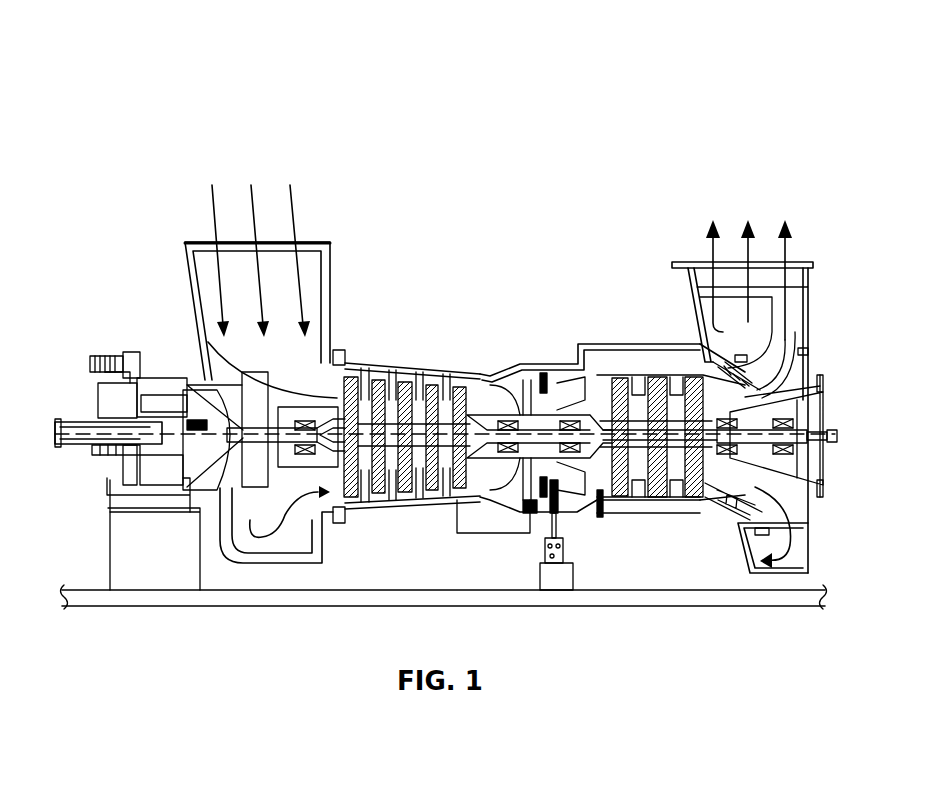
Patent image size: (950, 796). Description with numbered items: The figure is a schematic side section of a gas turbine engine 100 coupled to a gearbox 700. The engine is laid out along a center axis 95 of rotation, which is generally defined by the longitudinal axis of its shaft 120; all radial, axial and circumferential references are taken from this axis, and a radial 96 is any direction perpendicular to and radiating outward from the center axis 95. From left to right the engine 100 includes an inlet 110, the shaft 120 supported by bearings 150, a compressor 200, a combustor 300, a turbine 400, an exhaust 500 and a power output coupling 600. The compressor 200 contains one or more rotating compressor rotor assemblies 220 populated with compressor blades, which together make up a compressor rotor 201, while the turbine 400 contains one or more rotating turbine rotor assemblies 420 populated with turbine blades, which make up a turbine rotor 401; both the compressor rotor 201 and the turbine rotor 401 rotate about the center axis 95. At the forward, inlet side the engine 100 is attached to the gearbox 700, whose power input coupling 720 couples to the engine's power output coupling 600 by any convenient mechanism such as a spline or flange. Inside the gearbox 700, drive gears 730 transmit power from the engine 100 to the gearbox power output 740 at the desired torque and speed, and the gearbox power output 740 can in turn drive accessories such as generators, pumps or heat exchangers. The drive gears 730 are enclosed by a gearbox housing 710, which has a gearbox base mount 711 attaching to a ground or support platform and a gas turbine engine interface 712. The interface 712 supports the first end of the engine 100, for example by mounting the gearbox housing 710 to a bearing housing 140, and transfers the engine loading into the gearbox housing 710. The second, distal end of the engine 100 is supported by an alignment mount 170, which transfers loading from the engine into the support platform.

The gas turbine engine 100 is at (140, 28).
The inlet 110 is at (185, 162).
The shaft 120 is at (335, 520).
The bearing housing 140 is at (258, 560).
The bearings 150 is at (335, 505).
The compressor 200 is at (340, 162).
The compressor rotor 201 is at (478, 493).
The compressor rotor assemblies 220 is at (432, 480).
The combustor 300 is at (600, 167).
The alignment mount 170 is at (563, 552).
The turbine 400 is at (720, 164).
The turbine rotor 401 is at (680, 493).
The turbine rotor assemblies 420 is at (628, 500).
The exhaust 500 is at (723, 164).
The center axis 95 is at (833, 437).
The radial 96 is at (834, 418).
The gearbox 700 is at (119, 308).
The gearbox housing 710 is at (107, 458).
The gearbox base mount 711 is at (112, 505).
The gas turbine engine interface 712 is at (222, 553).
The power input coupling 720 is at (192, 388).
The drive gears 730 is at (136, 462).
The gearbox power output 740 is at (85, 419).
The power output coupling 600 is at (222, 487).